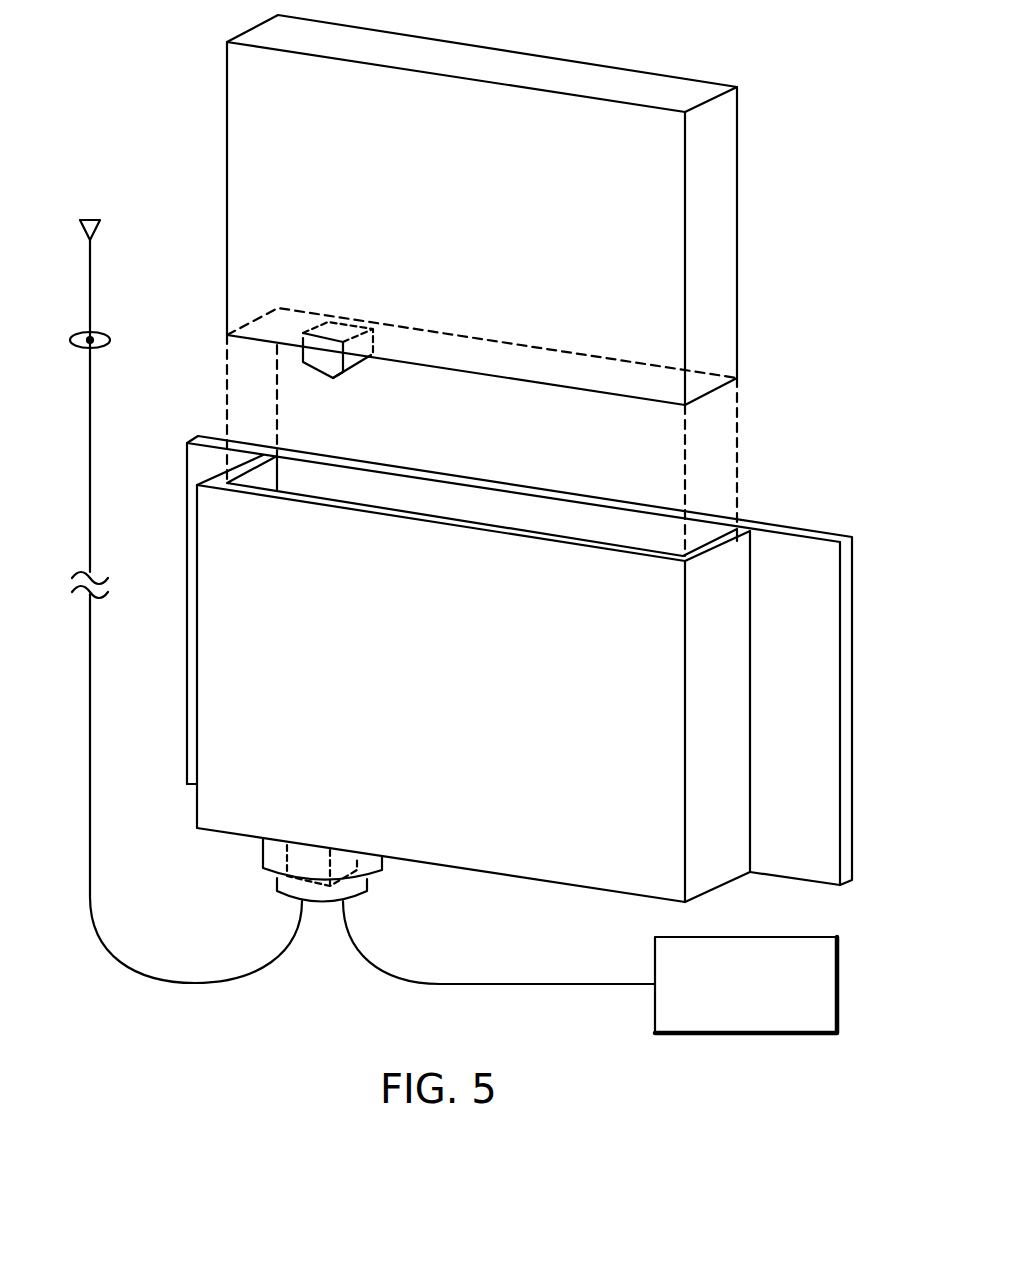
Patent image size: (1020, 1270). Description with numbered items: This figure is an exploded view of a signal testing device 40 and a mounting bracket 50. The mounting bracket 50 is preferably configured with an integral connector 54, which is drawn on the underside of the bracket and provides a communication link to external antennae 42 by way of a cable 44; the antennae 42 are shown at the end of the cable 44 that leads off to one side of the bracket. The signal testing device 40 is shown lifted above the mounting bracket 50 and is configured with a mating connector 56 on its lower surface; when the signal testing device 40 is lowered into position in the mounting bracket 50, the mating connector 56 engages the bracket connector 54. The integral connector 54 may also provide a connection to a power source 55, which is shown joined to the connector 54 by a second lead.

The signal testing device 40 is at (720, 128).
The external antennae 42 is at (105, 222).
The cable 44 is at (90, 873).
The mounting bracket 50 is at (848, 615).
The integral connector 54 is at (367, 891).
The power source 55 is at (838, 982).
The mating connector 56 is at (344, 373).